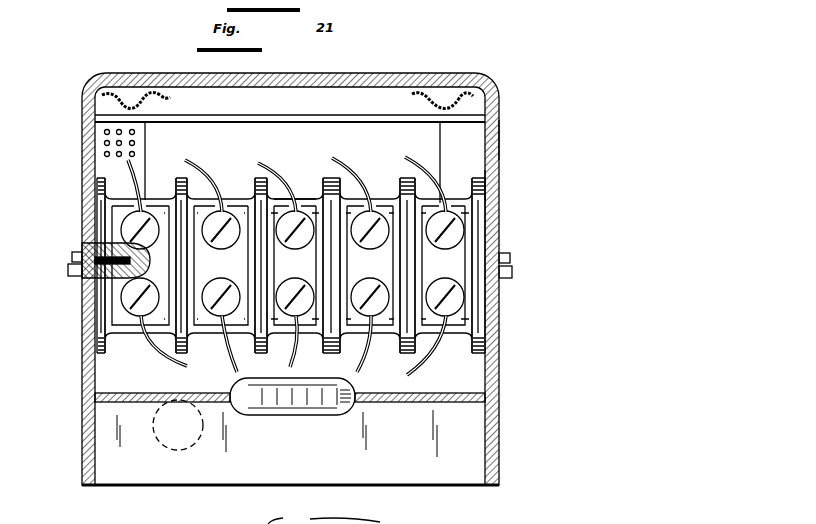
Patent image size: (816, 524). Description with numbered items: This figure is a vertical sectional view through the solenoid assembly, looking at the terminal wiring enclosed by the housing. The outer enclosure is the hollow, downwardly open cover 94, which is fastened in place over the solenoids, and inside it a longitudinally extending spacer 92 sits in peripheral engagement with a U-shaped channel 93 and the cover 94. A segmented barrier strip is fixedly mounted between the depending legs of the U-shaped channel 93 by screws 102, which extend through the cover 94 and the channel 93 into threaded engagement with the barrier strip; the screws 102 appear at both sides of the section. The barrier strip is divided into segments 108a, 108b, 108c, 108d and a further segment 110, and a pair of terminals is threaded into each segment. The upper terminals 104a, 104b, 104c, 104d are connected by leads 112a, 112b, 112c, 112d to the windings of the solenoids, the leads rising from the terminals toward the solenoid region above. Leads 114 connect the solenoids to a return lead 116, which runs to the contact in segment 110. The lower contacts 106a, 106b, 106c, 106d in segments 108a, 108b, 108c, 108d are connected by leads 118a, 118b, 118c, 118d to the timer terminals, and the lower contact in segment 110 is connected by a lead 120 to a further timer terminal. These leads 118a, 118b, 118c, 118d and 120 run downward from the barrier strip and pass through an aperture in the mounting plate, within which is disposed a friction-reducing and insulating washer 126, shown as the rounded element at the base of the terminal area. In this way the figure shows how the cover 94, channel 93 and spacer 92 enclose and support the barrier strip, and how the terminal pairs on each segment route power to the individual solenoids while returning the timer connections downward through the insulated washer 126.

The spacer 92 is at (362, 97).
The U-shaped channel 93 is at (499, 137).
The cover 94 is at (490, 184).
The screws 102 is at (70, 258).
The terminal 104a is at (150, 212).
The terminal 104b is at (228, 212).
The terminal 104c is at (364, 214).
The terminal 104d is at (453, 206).
The contact 106a is at (125, 299).
The contact 106b is at (180, 352).
The contact 106c is at (360, 371).
The contact 106d is at (466, 292).
The barrier strip segment 108a is at (106, 229).
The barrier strip segment 108b is at (240, 262).
The barrier strip segment 108c is at (389, 262).
The barrier strip segment 108d is at (472, 213).
The segment 110 is at (262, 204).
The lead 112a is at (142, 163).
The lead 112b is at (190, 168).
The lead 112c is at (346, 166).
The lead 112d is at (412, 152).
The leads 114 is at (324, 518).
The return lead 116 is at (264, 165).
The lead 118a is at (149, 341).
The lead 118b is at (228, 372).
The lead 118c is at (364, 361).
The lead 118d is at (418, 374).
The lead 120 is at (291, 352).
The washer 126 is at (290, 413).